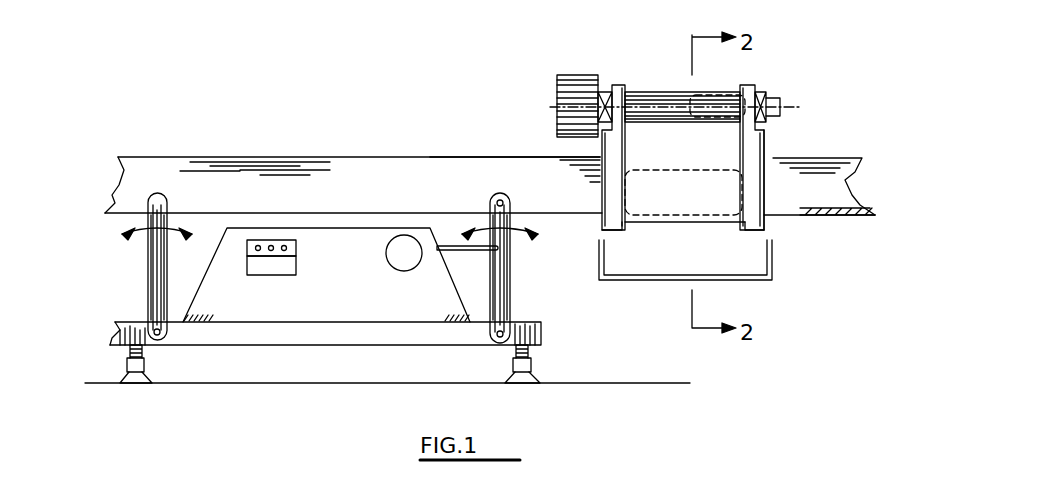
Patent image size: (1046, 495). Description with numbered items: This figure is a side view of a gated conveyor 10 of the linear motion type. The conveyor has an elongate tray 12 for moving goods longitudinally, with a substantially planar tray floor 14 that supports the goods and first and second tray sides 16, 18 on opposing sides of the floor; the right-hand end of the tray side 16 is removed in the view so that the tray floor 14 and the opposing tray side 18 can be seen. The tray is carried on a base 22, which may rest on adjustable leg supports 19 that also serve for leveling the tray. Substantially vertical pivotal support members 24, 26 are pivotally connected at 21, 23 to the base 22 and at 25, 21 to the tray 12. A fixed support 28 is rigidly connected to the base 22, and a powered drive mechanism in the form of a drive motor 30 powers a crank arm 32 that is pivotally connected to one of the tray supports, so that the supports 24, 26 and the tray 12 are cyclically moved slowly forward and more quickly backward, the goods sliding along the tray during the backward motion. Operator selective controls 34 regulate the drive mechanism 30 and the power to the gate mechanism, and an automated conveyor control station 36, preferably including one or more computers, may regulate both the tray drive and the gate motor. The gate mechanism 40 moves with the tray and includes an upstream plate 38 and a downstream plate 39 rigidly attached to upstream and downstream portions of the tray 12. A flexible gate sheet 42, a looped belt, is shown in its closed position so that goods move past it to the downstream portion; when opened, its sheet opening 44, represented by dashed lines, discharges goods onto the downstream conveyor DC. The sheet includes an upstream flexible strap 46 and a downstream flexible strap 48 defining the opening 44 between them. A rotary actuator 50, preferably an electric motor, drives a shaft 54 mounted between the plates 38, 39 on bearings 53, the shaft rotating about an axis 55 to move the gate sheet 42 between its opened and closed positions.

The gated conveyor 10 is at (393, 105).
The elongate tray 12 is at (513, 155).
The tray floor 14 is at (855, 218).
The first tray side 16 is at (390, 165).
The second tray side 18 is at (864, 178).
The adjustable leg supports 19 is at (530, 368).
The pivotal connection 21 is at (152, 333).
The base 22 is at (345, 350).
The pivotal connection 23 is at (500, 337).
The pivotal support member 24 is at (150, 275).
The pivotal connection 25 is at (150, 200).
The pivotal support member 26 is at (511, 292).
The fixed support 28 is at (375, 303).
The drive motor 30 is at (395, 253).
The crank arm 32 is at (455, 253).
The operator selective controls 34 is at (247, 243).
The automated conveyor control station 36 is at (277, 268).
The upstream plate 38 is at (600, 150).
The downstream plate 39 is at (766, 148).
The gate mechanism 40 is at (688, 150).
The flexible gate sheet 42 is at (618, 218).
The sheet opening 44 is at (725, 216).
The upstream flexible strap 46 is at (616, 120).
The downstream flexible strap 48 is at (748, 85).
The rotary actuator 50 is at (556, 82).
The bearings 53 is at (604, 90).
The shaft 54 is at (680, 92).
The axis 55 is at (787, 80).
The downstream conveyor DC is at (755, 281).